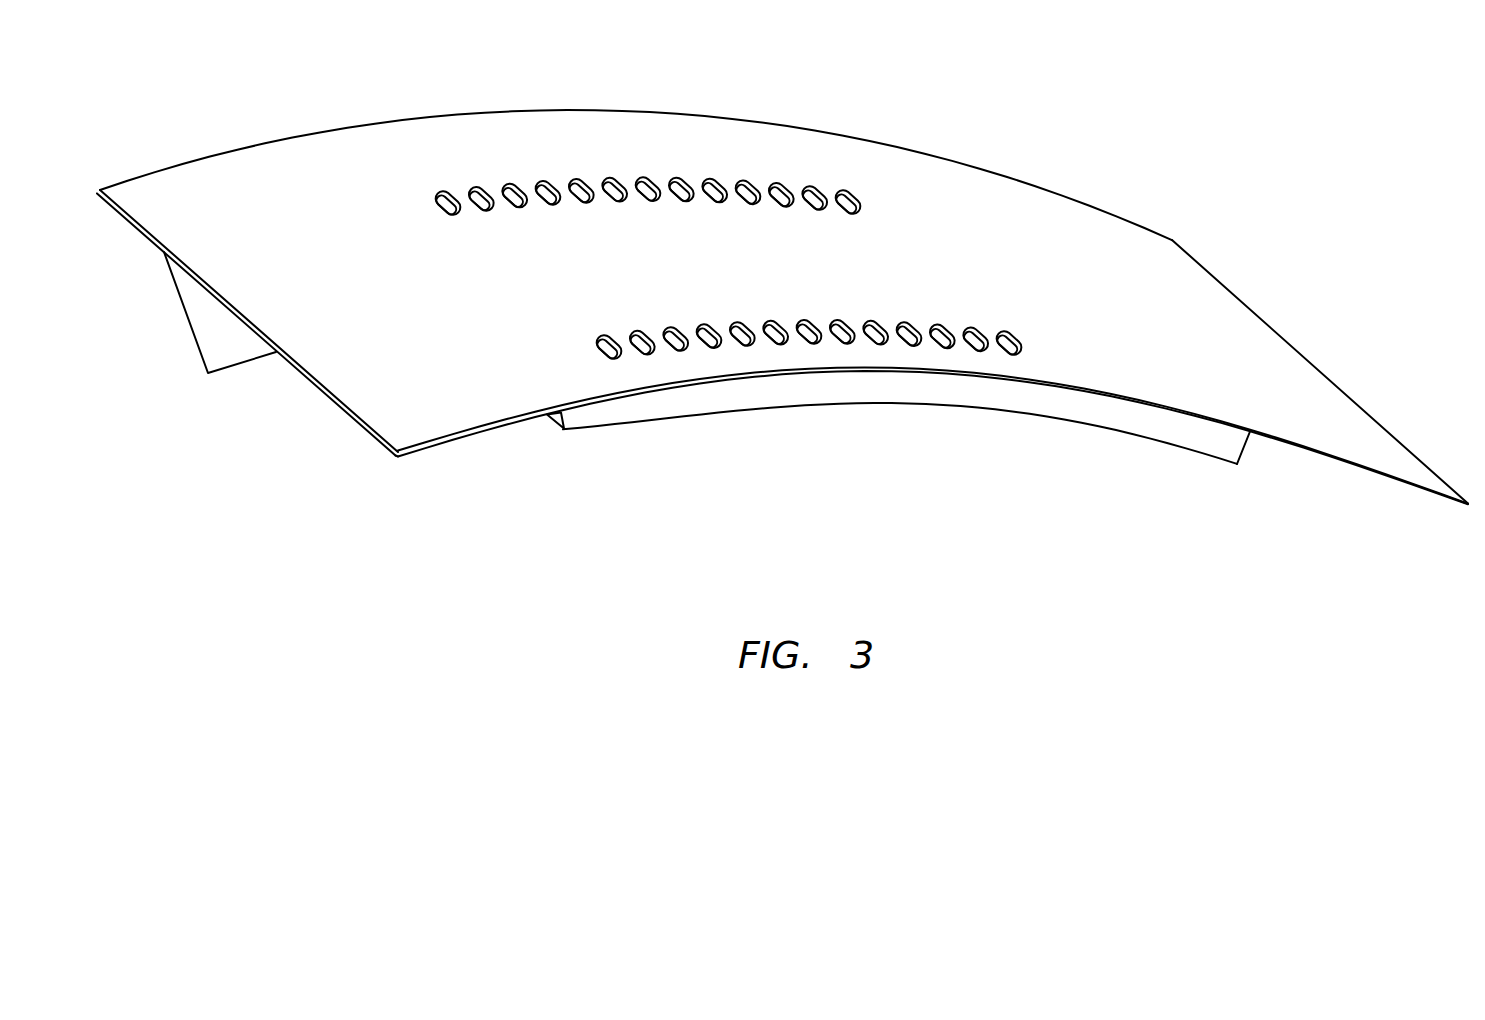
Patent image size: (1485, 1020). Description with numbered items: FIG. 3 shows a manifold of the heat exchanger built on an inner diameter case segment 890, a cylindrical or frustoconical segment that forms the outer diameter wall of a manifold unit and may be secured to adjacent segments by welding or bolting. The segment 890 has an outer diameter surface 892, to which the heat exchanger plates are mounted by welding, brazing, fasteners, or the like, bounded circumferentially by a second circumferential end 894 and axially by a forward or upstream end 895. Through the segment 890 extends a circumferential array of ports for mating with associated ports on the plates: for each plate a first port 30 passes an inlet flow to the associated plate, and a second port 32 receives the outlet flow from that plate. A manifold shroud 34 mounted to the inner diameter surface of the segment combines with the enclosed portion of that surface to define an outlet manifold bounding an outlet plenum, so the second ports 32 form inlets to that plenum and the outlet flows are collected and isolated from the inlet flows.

The segment 890 is at (1146, 159).
The outer diameter surface 892 is at (1195, 300).
The second circumferential end 894 is at (357, 420).
The forward/upstream end 895 is at (467, 428).
The manifold shroud 34 is at (851, 391).
The first port 30 is at (855, 195).
The second port 32 is at (1018, 337).